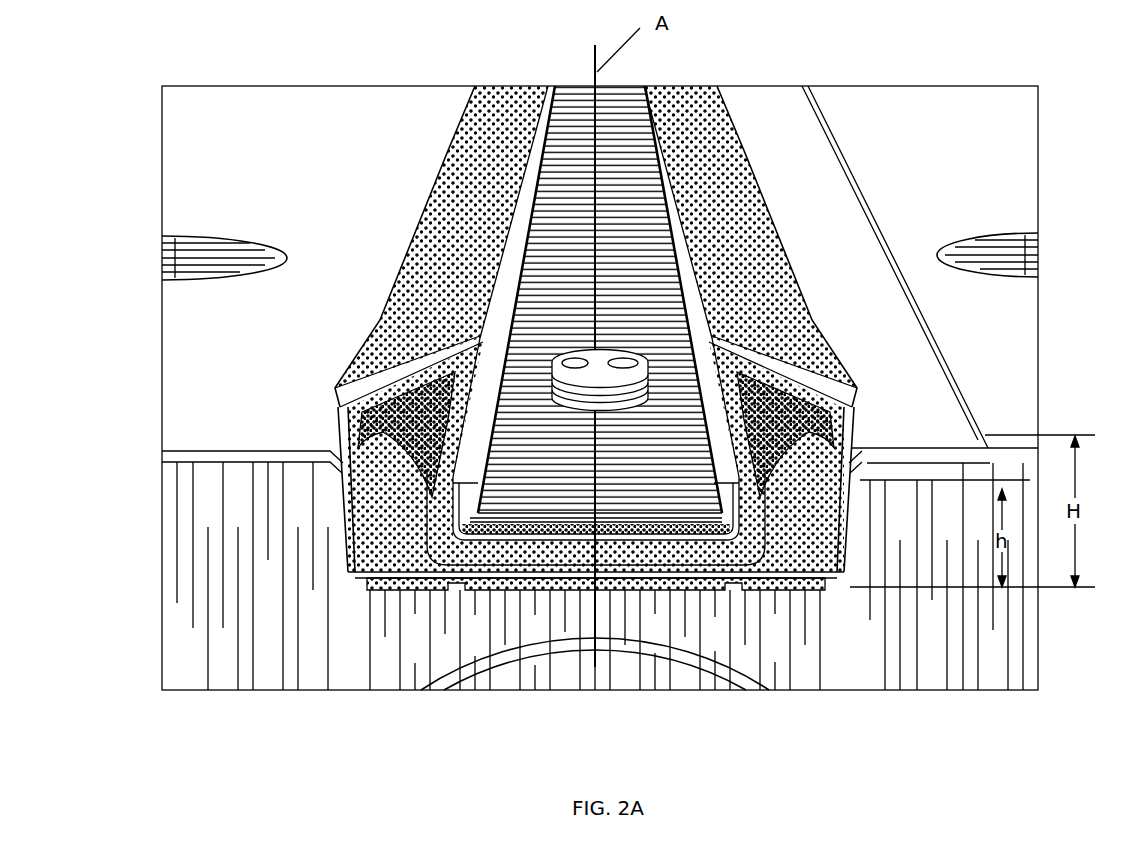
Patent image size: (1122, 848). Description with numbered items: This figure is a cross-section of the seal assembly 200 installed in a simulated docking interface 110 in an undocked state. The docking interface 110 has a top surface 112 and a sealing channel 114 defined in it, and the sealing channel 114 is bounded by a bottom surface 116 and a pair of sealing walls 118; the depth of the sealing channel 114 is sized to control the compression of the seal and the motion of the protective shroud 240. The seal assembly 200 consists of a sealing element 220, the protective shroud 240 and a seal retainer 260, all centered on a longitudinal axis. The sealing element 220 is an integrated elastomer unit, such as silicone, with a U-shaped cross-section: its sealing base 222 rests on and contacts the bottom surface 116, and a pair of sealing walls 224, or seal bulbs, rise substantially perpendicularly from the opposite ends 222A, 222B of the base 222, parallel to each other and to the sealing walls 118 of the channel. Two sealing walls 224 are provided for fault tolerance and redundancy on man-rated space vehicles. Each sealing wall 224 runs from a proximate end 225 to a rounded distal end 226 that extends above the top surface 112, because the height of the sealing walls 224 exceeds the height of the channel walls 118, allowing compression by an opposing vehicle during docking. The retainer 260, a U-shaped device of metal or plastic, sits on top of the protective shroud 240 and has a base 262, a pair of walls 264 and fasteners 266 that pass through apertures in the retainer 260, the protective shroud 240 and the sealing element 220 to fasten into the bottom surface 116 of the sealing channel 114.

The seal assembly 200 is at (460, 70).
The docking interface 110 is at (180, 460).
The top surface 112 is at (195, 360).
The sealing channel 114 is at (343, 518).
The bottom surface 116 is at (353, 587).
The sealing walls of the channel 118 is at (350, 543).
The sealing element 220 is at (665, 540).
The sealing base 222 is at (552, 583).
The first end of the base 222A is at (403, 585).
The second end of the base 222B is at (785, 585).
The sealing walls 224 is at (392, 522).
The proximate end 225 is at (390, 568).
The distal end 226 is at (360, 445).
The protective shroud 240 is at (657, 108).
The seal retainer 260 is at (550, 528).
The retainer base 262 is at (613, 527).
The retainer walls 264 is at (467, 507).
The fasteners 266 is at (645, 387).